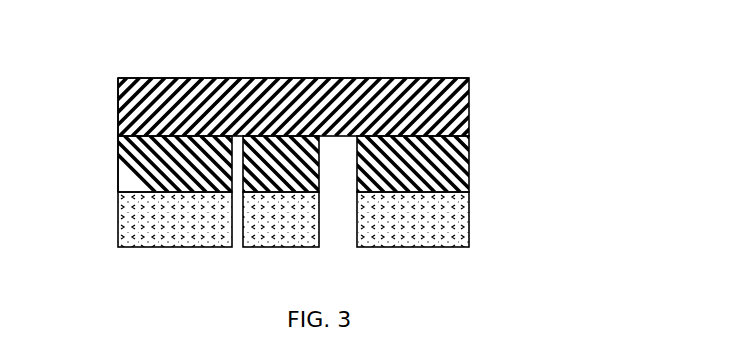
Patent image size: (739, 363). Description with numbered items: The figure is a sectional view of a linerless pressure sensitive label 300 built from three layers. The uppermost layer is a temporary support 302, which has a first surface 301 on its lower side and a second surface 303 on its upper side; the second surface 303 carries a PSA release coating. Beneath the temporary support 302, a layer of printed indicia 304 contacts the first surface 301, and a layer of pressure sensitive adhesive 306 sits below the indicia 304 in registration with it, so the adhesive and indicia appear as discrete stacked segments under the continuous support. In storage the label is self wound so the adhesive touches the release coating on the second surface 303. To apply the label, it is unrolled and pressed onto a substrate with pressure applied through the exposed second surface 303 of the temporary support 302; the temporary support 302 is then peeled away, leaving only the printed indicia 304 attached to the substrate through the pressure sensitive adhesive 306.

The pressure sensitive label 300 is at (315, 126).
The first surface 301 is at (118, 136).
The temporary support 302 is at (469, 107).
The second surface 303 is at (140, 75).
The indicia 304 is at (469, 173).
The pressure sensitive adhesive 306 is at (469, 228).